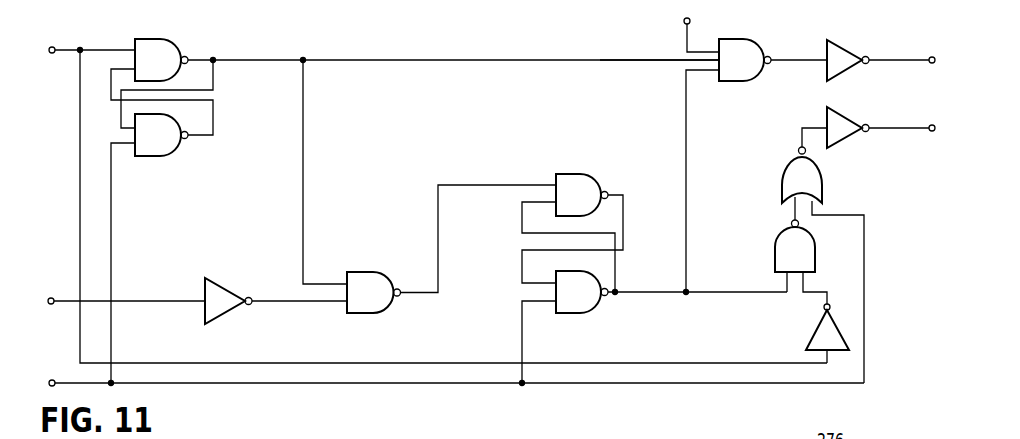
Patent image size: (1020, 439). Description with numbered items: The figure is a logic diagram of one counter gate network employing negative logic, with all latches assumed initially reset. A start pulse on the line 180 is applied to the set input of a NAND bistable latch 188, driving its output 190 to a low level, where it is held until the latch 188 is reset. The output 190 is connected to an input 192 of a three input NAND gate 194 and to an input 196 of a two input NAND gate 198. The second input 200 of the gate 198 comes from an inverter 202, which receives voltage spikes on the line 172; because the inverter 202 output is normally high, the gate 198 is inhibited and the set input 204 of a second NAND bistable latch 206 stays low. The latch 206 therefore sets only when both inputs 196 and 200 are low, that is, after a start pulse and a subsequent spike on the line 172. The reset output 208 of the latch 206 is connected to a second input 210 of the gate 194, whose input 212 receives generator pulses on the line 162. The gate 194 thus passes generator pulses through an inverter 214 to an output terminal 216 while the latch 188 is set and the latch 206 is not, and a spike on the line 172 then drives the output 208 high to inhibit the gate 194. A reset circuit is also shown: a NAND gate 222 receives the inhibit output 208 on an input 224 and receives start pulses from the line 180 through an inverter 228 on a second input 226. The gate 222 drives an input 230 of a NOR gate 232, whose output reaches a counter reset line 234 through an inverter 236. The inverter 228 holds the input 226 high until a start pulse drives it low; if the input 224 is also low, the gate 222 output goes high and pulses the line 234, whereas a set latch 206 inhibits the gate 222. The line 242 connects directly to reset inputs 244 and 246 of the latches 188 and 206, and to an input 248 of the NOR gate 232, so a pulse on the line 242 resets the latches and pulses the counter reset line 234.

The generator pulse line 162 is at (683, 21).
The differentiator output line 172 is at (51, 297).
The start pulse line 180 is at (432, 189).
The NAND bistable latch 188 is at (170, 31).
The latch output 190 is at (185, 56).
The gate input 192 is at (655, 62).
The three input NAND gate 194 is at (756, 33).
The gate input 196 is at (333, 282).
The two input NAND gate 198 is at (373, 264).
The second gate input 200 is at (331, 303).
The inverter 202 is at (240, 287).
The set input 204 is at (519, 157).
The second NAND bistable latch 206 is at (612, 147).
The reset output 208 is at (607, 297).
The second gate input 210 is at (700, 72).
The gate input 212 is at (701, 51).
The inverter 214 is at (841, 44).
The output terminal 216 is at (931, 64).
The NAND gate 222 is at (775, 255).
The gate input 224 is at (786, 284).
The second gate input 226 is at (808, 279).
The inverter 228 is at (811, 328).
The NOR gate input 230 is at (790, 213).
The NOR gate 232 is at (781, 177).
The counter reset line 234 is at (931, 132).
The inverter 236 is at (875, 100).
The reset line 242 is at (50, 380).
The latch reset input 244 is at (127, 158).
The latch reset input 246 is at (539, 303).
The NOR gate input 248 is at (837, 213).